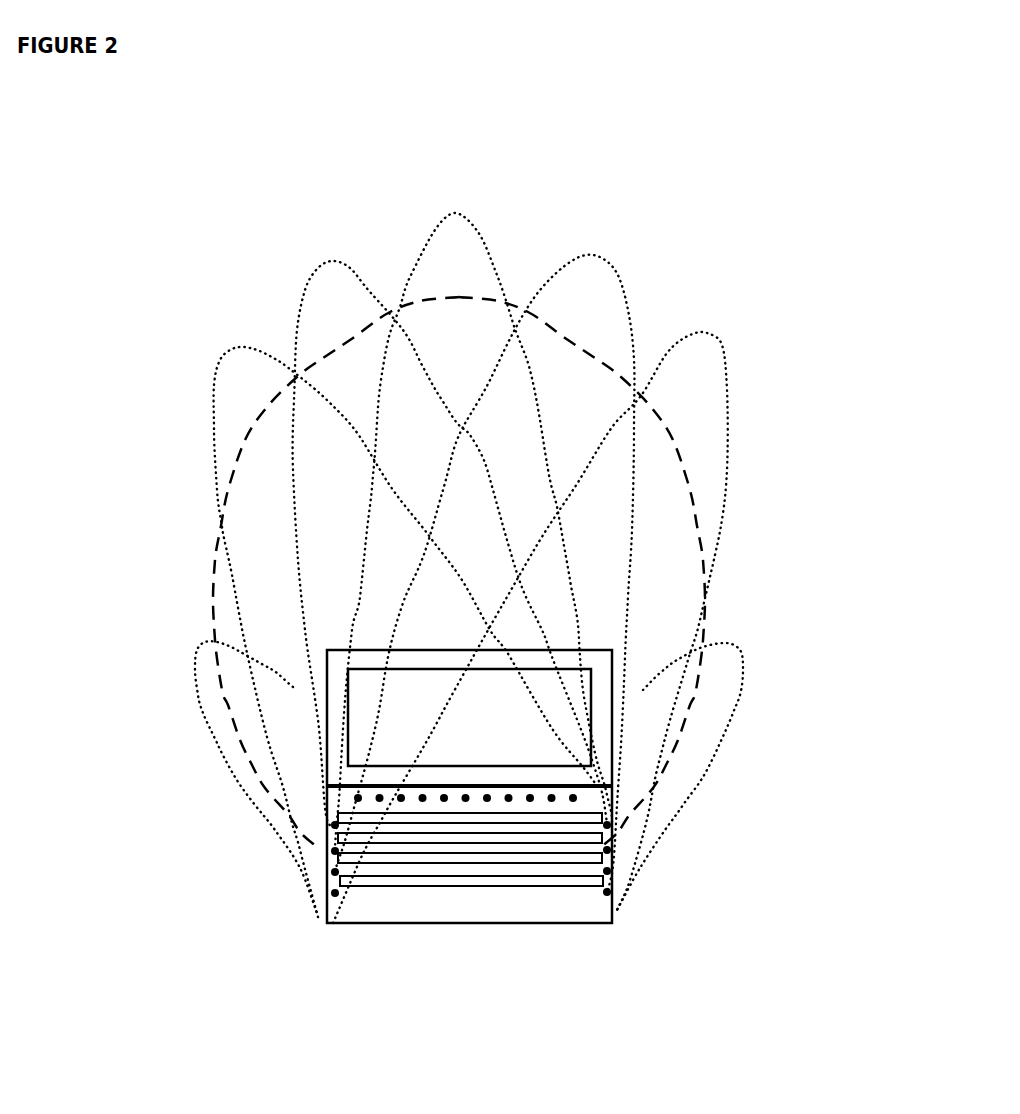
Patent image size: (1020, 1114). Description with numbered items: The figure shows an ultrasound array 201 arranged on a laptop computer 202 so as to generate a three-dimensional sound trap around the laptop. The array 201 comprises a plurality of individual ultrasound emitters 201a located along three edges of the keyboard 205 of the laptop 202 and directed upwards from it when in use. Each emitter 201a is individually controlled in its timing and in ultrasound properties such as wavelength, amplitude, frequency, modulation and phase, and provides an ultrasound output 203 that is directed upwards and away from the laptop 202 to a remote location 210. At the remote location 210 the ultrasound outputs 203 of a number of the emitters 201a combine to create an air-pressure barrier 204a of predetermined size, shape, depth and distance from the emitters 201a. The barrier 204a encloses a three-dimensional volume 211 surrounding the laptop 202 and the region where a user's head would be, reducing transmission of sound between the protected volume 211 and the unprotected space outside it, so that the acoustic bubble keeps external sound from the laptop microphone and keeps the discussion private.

The ultrasound array 201 is at (600, 889).
The ultrasound emitter 201a is at (330, 825).
The laptop computer 202 is at (372, 911).
The ultrasound output 203 is at (223, 363).
The air-pressure barrier 204a is at (213, 587).
The keyboard 205 is at (527, 870).
The remote location 210 is at (396, 290).
The three-dimensional volume 211 is at (487, 547).